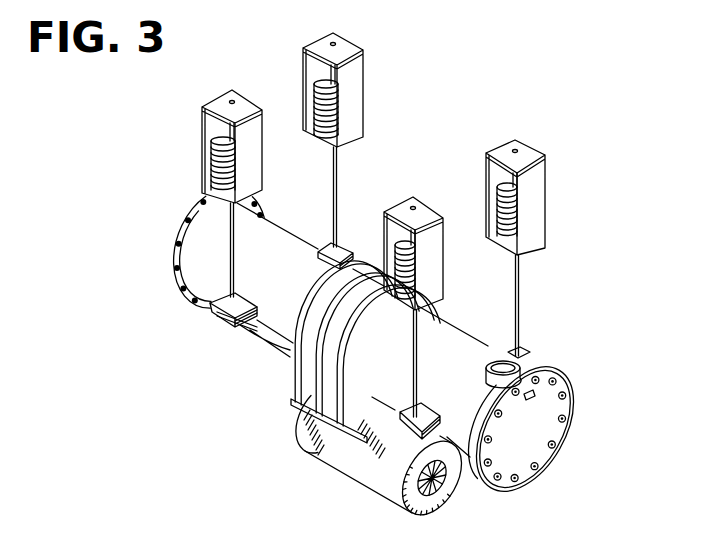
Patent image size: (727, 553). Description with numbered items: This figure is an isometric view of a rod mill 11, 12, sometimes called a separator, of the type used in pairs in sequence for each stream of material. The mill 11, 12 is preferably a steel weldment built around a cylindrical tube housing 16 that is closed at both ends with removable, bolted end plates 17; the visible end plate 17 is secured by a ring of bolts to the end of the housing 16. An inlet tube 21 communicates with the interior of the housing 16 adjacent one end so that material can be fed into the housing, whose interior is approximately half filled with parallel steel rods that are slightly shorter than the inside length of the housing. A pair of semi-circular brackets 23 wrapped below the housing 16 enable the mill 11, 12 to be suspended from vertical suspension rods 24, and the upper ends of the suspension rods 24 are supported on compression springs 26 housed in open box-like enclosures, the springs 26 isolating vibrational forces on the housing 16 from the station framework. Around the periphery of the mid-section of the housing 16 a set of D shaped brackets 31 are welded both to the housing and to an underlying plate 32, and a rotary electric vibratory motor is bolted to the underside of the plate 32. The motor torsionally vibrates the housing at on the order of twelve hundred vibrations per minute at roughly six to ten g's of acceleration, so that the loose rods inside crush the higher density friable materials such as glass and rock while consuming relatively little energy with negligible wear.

The rod mill 11 is at (228, 382).
The rod mill 12 is at (232, 382).
The cylindrical tube housing 16 is at (483, 345).
The end plate 17 is at (540, 427).
The inlet tube 21 is at (520, 487).
The semi-circular bracket 23 is at (290, 349).
The suspension rod 24 is at (231, 250).
The compression spring 26 is at (202, 172).
The D shaped bracket 31 is at (295, 368).
The plate 32 is at (291, 404).